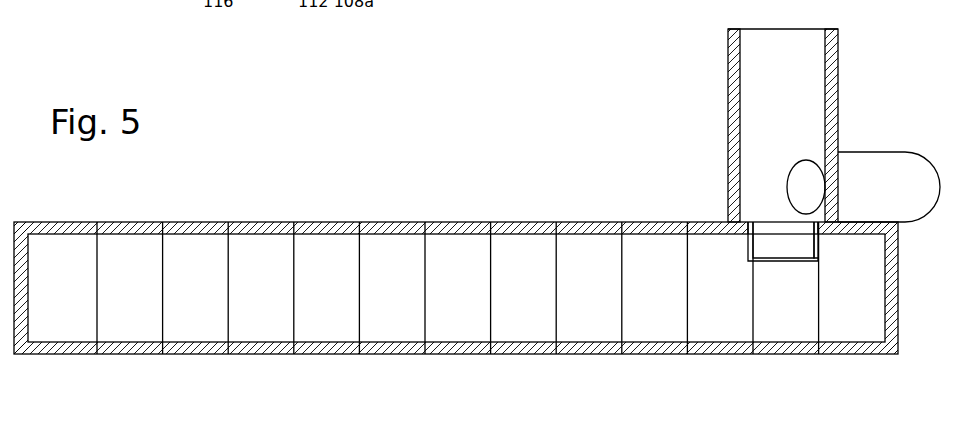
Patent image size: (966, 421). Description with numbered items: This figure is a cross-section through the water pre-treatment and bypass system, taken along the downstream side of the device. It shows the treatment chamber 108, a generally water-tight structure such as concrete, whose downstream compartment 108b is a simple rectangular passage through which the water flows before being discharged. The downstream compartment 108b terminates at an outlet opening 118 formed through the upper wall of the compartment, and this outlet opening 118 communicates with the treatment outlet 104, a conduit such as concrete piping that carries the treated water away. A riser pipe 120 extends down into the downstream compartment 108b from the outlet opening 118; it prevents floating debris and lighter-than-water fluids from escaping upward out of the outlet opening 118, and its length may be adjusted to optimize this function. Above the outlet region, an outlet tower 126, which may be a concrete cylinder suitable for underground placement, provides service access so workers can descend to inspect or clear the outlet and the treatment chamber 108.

The treatment outlet 104 is at (862, 160).
The treatment chamber 108 is at (327, 222).
The downstream compartment 108b is at (589, 288).
The outlet opening 118 is at (772, 232).
The riser pipe 120 is at (816, 250).
The outlet tower 126 is at (728, 84).